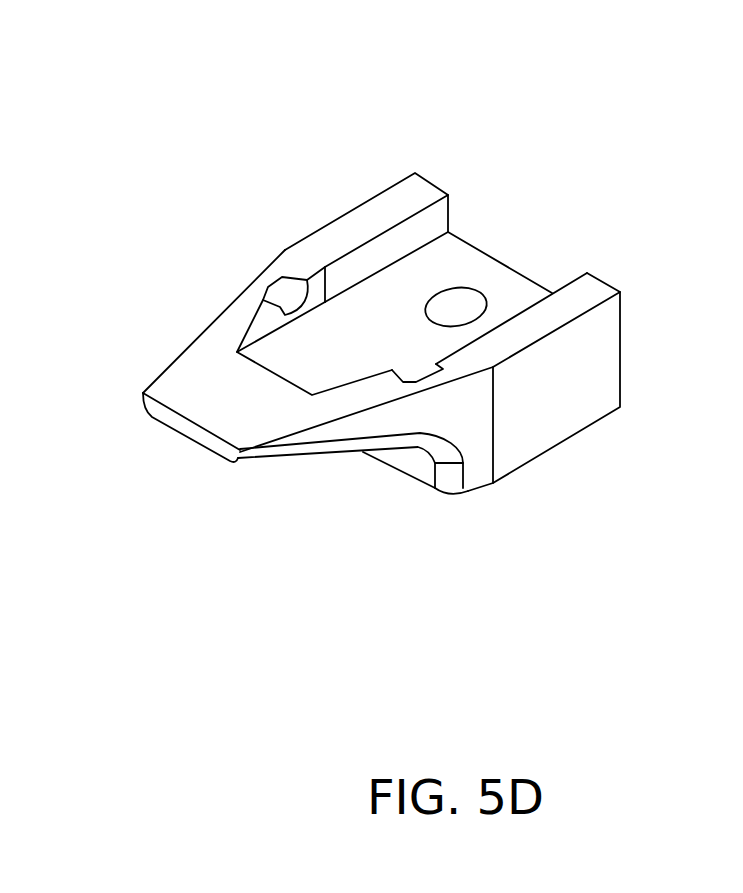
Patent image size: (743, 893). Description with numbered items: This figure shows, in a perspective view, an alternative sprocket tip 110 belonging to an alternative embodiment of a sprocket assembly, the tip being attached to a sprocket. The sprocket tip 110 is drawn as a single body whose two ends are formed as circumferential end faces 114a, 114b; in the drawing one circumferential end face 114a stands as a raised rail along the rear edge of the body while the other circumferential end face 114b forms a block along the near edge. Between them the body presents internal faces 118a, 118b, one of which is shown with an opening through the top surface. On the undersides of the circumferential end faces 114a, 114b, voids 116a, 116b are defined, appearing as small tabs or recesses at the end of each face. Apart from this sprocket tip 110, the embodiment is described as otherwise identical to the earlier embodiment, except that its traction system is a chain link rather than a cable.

The sprocket tip 110 is at (195, 342).
The circumferential end face 114a is at (391, 185).
The circumferential end face 114b is at (548, 400).
The void 116a is at (280, 286).
The void 116b is at (415, 382).
The internal face 118a is at (372, 250).
The internal face 118b is at (518, 307).